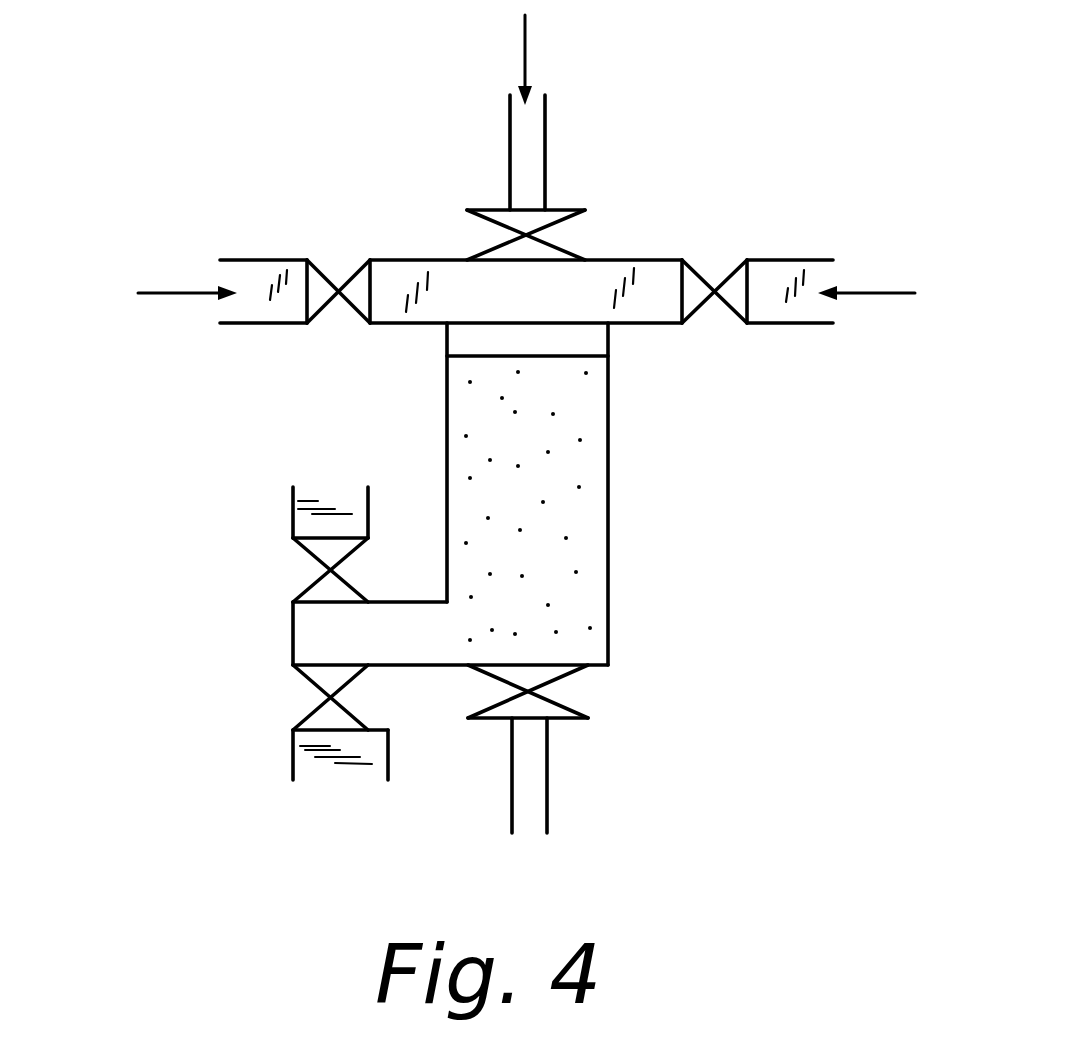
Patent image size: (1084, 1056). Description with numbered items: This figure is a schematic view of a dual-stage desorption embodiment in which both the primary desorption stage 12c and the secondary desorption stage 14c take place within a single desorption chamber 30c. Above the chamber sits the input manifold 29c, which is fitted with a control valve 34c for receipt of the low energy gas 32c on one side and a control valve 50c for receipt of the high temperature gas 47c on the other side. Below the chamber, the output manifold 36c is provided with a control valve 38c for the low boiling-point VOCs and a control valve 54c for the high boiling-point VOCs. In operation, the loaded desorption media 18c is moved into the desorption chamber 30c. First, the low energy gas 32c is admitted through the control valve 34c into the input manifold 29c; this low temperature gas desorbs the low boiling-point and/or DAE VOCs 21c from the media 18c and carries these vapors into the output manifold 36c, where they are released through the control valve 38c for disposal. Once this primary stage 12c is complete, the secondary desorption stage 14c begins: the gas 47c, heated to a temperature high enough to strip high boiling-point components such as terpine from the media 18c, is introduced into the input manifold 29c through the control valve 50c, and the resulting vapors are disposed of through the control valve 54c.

The primary desorption stage 12c is at (700, 440).
The secondary desorption stage 14c is at (718, 490).
The desorption media 18c is at (470, 422).
The low BP and/or DAE VOCs 21c is at (525, 53).
The input manifold 29c is at (642, 275).
The desorption chamber 30c is at (595, 612).
The low energy gas 32c is at (168, 293).
The control valve 34c is at (355, 270).
The output manifold 36c is at (305, 627).
The control valve 38c is at (312, 553).
The high temperature gas 47c is at (872, 293).
The control valve 50c is at (700, 275).
The control valve 54c is at (312, 708).